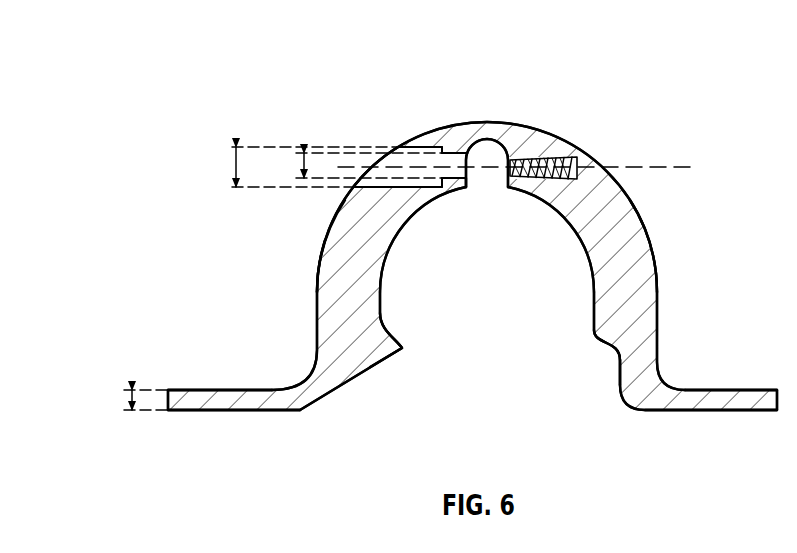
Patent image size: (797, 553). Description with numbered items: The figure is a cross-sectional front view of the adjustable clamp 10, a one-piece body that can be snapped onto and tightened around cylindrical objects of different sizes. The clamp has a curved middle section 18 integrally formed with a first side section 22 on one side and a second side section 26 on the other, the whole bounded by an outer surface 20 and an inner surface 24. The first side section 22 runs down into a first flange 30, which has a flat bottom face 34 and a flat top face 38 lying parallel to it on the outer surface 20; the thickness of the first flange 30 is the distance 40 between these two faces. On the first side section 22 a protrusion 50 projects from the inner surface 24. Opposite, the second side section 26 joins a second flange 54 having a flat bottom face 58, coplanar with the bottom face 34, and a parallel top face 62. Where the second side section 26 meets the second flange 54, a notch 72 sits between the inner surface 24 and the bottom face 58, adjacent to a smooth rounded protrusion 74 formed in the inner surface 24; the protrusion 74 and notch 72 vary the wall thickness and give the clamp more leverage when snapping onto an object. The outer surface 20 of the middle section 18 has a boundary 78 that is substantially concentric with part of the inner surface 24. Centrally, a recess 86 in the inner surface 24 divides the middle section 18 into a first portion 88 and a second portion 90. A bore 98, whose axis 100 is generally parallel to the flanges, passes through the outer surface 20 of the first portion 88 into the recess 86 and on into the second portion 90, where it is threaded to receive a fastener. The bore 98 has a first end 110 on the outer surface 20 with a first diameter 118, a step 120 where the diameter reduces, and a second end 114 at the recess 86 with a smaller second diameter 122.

The adjustable clamp 10 is at (186, 48).
The middle section 18 is at (542, 127).
The outer surface 20 is at (587, 115).
The first side section 22 is at (303, 331).
The inner surface 24 is at (579, 253).
The second side section 26 is at (664, 340).
The first flange 30 is at (198, 399).
The bottom face 34 is at (271, 412).
The top face 38 is at (198, 389).
The distance 40 is at (130, 394).
The protrusion 50 is at (404, 349).
The second flange 54 is at (755, 402).
The bottom face 58 is at (692, 412).
The top face 62 is at (750, 389).
The notch 72 is at (619, 361).
The protrusion 74 is at (593, 335).
The boundary 78 is at (328, 221).
The recess 86 is at (497, 182).
The first portion 88 is at (318, 246).
The second portion 90 is at (655, 241).
The bore 98 is at (377, 162).
The axis 100 is at (674, 167).
The first end 110 is at (405, 148).
The second end 114 is at (466, 184).
The first diameter 118 is at (236, 160).
The step 120 is at (449, 146).
The second diameter 122 is at (303, 154).